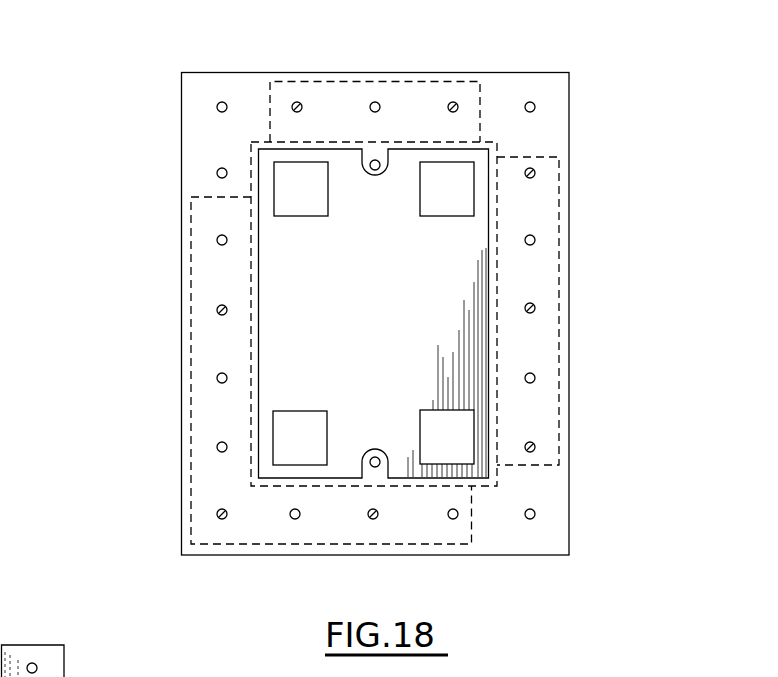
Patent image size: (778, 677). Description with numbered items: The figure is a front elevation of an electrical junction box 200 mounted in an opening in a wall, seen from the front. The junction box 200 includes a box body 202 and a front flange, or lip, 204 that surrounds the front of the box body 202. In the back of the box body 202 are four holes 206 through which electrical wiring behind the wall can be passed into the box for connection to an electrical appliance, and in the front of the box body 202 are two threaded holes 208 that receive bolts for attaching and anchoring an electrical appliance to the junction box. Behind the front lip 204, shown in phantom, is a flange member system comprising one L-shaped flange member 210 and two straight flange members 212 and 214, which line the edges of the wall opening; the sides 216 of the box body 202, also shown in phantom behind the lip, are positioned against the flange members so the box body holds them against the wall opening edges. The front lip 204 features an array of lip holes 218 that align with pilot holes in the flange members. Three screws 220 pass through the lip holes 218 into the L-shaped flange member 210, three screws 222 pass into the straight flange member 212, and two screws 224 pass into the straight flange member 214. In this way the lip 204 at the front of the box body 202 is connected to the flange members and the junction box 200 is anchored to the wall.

The electrical junction box 200 is at (150, 253).
The box body 202 is at (347, 338).
The front flange 204 is at (506, 540).
The holes 206 is at (454, 215).
The threaded holes 208 is at (374, 456).
The L-shaped flange member 210 is at (300, 533).
The straight flange member 212 is at (533, 274).
The straight flange member 214 is at (414, 92).
The sides of the box body 216 is at (250, 160).
The lip holes 218 is at (535, 513).
The screws 220 is at (217, 514).
The screws 222 is at (535, 309).
The screws 224 is at (300, 101).